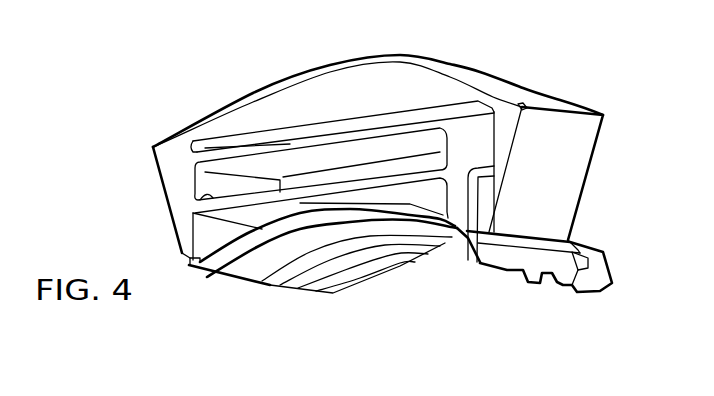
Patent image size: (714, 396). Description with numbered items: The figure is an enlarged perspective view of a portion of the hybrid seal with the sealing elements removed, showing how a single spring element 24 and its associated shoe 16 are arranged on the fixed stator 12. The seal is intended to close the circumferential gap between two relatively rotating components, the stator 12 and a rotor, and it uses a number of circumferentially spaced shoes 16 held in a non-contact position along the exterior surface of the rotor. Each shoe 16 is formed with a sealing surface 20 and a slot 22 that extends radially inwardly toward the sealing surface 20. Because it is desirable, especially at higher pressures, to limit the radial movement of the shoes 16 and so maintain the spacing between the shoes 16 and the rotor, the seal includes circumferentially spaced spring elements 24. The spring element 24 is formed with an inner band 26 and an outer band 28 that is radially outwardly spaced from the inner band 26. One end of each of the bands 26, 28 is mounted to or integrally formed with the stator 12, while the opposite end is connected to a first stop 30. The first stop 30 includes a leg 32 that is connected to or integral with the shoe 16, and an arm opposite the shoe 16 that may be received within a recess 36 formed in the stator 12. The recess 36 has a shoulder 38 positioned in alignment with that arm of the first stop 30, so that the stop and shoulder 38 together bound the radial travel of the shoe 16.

The stator 12 is at (452, 67).
The shoe 16 is at (231, 287).
The sealing surface 20 is at (262, 250).
The slot 22 is at (586, 254).
The spring element 24 is at (230, 130).
The inner band 26 is at (205, 196).
The outer band 28 is at (285, 140).
The first stop 30 is at (470, 127).
The leg 32 is at (458, 232).
The recess 36 is at (483, 138).
The shoulder 38 is at (487, 178).